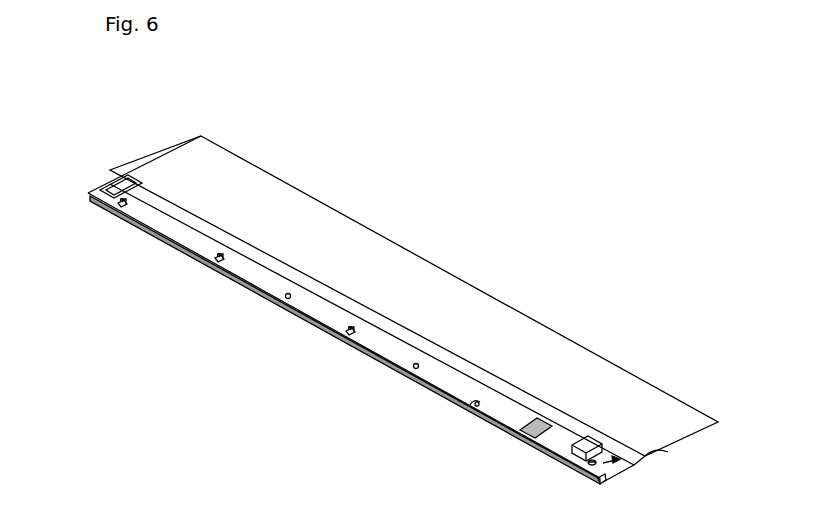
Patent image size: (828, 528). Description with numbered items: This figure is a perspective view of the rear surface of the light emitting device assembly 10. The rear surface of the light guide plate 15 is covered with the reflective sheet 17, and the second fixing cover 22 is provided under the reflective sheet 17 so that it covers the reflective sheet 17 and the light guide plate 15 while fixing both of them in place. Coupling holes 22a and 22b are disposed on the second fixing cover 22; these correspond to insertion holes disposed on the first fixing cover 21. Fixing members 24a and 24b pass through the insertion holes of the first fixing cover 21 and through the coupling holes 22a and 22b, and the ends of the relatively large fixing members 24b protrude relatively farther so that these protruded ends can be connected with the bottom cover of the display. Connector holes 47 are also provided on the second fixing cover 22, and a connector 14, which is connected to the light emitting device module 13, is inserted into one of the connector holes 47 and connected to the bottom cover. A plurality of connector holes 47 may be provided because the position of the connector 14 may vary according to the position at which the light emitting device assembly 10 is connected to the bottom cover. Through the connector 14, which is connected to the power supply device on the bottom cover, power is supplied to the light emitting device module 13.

The light emitting device assembly 10 is at (380, 218).
The light emitting device module 13 is at (650, 451).
The connector 14 is at (590, 437).
The light guide plate 15 is at (622, 479).
The reflective sheet 17 is at (458, 303).
The first fixing cover 21 is at (600, 483).
The second fixing cover 22 is at (553, 440).
The coupling hole 22a is at (222, 267).
The coupling hole 22b is at (121, 211).
The fixing member 24a is at (472, 405).
The fixing member 24b is at (118, 206).
The connector hole 47 is at (114, 188).